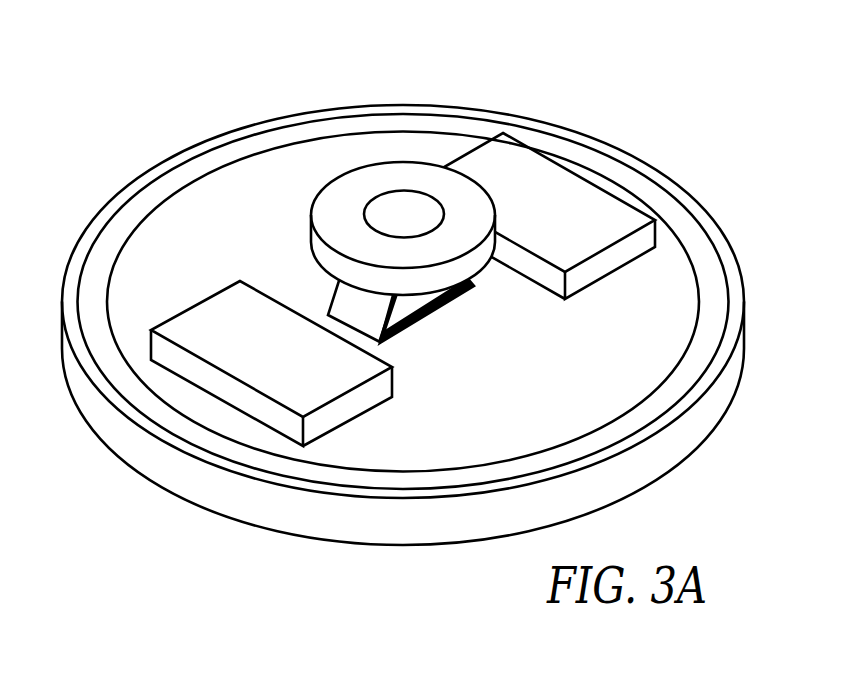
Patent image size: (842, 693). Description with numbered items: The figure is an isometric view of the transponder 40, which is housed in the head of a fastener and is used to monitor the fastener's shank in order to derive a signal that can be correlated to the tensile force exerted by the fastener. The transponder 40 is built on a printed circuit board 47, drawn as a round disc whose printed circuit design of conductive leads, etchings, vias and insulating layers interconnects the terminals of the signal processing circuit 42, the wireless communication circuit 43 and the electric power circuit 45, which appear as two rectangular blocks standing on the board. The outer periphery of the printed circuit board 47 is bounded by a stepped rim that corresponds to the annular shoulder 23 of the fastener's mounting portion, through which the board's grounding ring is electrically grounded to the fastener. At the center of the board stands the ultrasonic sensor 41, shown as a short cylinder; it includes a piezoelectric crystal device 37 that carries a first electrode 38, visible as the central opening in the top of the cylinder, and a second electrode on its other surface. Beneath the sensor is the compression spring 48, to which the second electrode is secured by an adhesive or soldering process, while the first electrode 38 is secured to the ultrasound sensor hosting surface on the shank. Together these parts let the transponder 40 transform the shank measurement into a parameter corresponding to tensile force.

The annular shoulder 23 is at (134, 212).
The piezoelectric crystal device 37 is at (516, 173).
The first electrode 38 is at (405, 205).
The transponder 40 is at (457, 234).
The ultrasonic sensor 41 is at (358, 176).
The signal processing circuit 42 is at (534, 191).
The wireless communication circuit 43 is at (523, 160).
The electric power circuit 45 is at (243, 325).
The printed circuit board 47 is at (190, 482).
The compression spring 48 is at (408, 302).